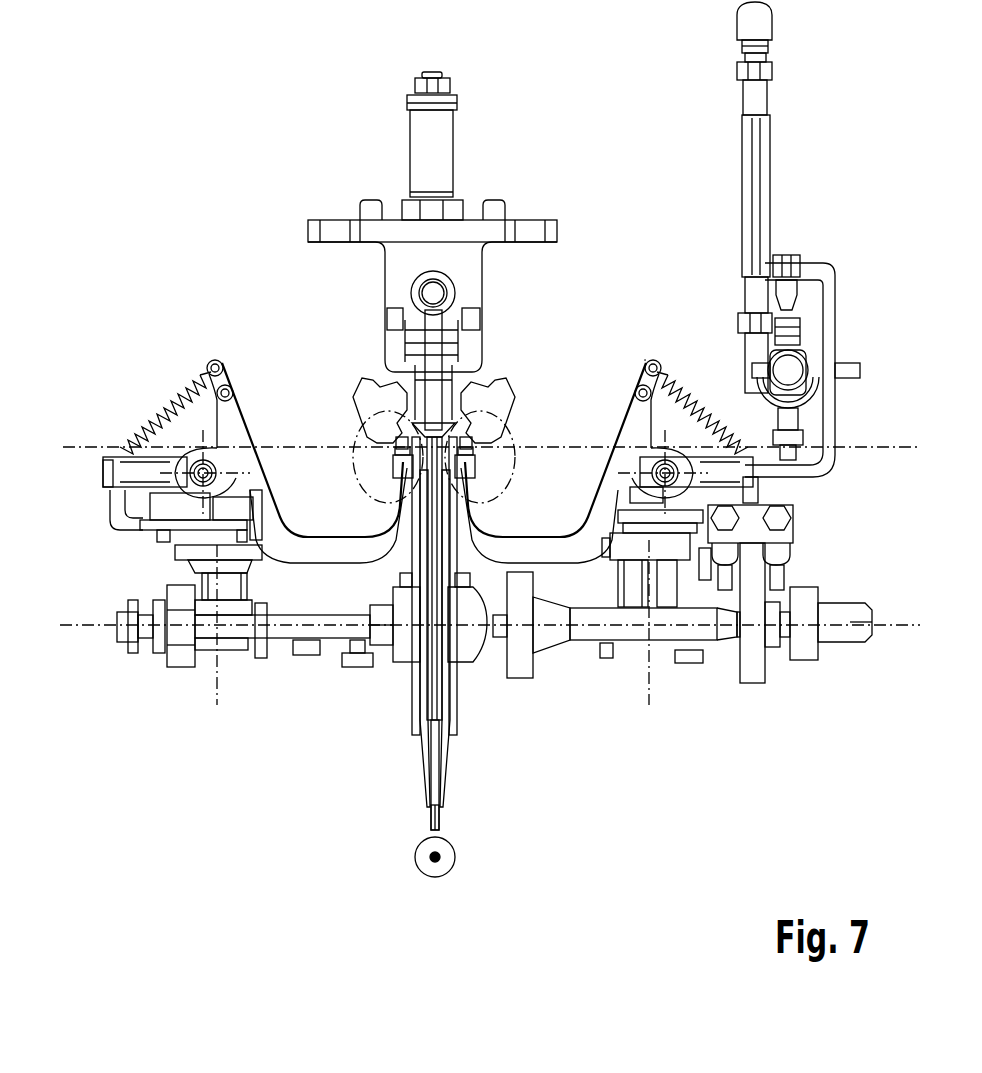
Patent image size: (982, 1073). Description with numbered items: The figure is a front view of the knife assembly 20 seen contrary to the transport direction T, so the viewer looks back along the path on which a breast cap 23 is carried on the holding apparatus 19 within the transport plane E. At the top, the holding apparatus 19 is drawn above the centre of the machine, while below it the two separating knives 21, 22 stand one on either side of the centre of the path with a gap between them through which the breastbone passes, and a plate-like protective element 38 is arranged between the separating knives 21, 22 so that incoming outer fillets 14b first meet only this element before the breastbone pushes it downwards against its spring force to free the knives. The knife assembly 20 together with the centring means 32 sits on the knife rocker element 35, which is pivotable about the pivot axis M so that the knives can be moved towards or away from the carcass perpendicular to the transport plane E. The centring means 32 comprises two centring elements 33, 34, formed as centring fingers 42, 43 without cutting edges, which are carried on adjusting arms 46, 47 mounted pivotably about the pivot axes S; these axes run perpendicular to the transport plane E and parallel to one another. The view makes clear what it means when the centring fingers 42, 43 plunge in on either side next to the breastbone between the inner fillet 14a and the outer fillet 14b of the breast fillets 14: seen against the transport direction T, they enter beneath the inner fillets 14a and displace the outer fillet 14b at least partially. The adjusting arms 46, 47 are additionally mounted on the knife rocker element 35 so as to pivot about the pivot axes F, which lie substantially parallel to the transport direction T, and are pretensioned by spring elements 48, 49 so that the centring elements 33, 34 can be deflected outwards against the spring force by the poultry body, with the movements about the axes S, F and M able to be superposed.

The holding apparatus 19 is at (348, 168).
The knife assembly 20 is at (834, 181).
The centring means 32 is at (680, 336).
The breast fillets 14 is at (338, 412).
The inner fillet 14a is at (402, 455).
The outer fillet 14b is at (373, 488).
The centring element 33 is at (341, 466).
The centring finger 42 is at (402, 468).
The centring element 34 is at (530, 466).
The centring finger 43 is at (477, 468).
The separating knife 21 is at (423, 765).
The separating knife 22 is at (447, 765).
The breast cap 23 is at (492, 512).
The protective element 38 is at (435, 822).
The knife rocker element 35 is at (347, 683).
The adjusting arm 46 is at (315, 550).
The adjusting arm 47 is at (567, 550).
The spring element 48 is at (160, 410).
The spring element 49 is at (698, 403).
The transport plane E is at (916, 445).
The pivot axis M is at (918, 622).
The pivot axis S is at (217, 692).
The pivot axis F is at (137, 425).
The transport direction T is at (415, 855).